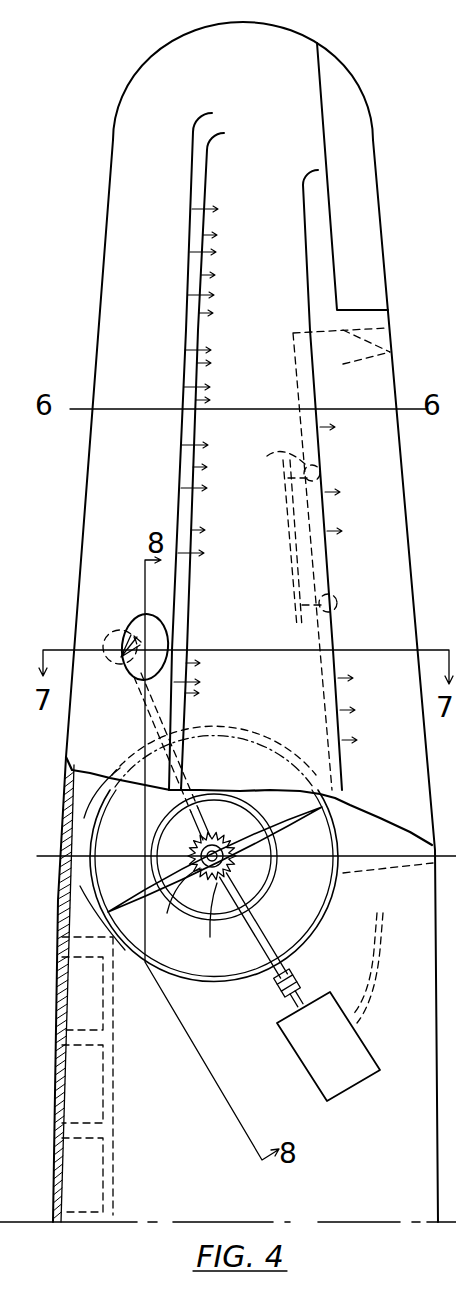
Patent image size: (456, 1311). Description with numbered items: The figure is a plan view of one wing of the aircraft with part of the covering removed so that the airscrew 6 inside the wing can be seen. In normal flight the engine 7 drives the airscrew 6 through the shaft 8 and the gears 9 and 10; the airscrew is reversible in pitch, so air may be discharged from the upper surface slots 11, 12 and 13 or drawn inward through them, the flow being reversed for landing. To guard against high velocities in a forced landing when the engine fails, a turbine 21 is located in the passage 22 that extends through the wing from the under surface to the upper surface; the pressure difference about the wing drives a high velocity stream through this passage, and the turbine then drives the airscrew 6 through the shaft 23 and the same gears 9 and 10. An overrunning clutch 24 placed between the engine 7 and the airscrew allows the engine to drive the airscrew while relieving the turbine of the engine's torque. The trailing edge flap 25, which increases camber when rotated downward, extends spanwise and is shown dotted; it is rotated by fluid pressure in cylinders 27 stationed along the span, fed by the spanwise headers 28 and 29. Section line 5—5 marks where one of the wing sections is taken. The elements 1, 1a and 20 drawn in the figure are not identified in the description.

The tower housing 1 is at (228, 622).
The wall compartments 1a is at (75, 1000).
The section line 5— 5 is at (245, 840).
The airscrew 6 is at (303, 823).
The engine 7 is at (328, 1046).
The shaft 8 is at (262, 935).
The gear 9 is at (214, 886).
The gear 10 is at (256, 853).
The upper surface slot 11 is at (186, 302).
The upper surface slot 12 is at (200, 333).
The upper surface slot 13 is at (303, 247).
The upper chamber 20 is at (386, 176).
The turbine 21 is at (112, 650).
The passage 22 is at (162, 630).
The shaft 23 is at (203, 825).
The overrunning clutch 24 is at (299, 979).
The trailing edge flap 25 is at (390, 352).
The cylinder 27 is at (276, 471).
The header 28 is at (288, 537).
The header 29 is at (292, 560).